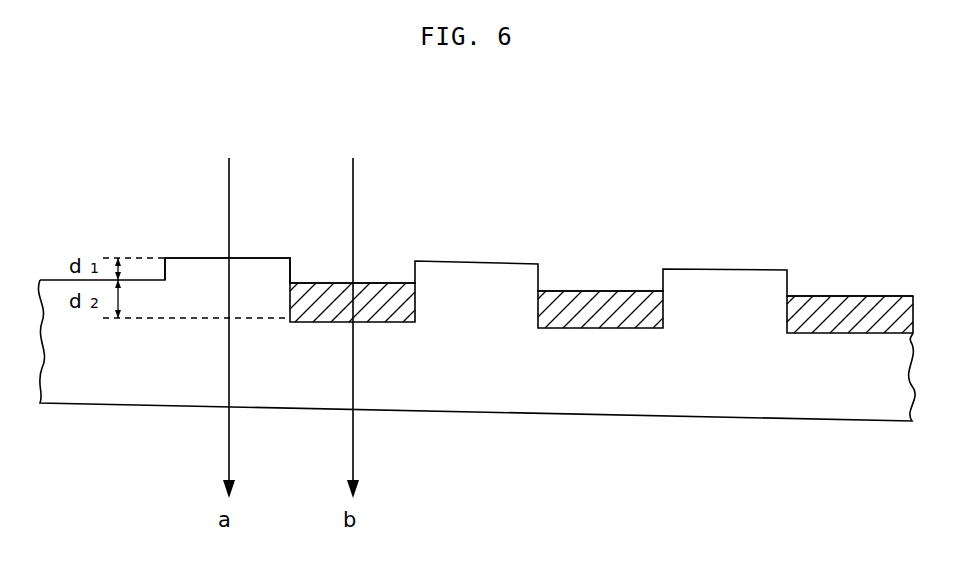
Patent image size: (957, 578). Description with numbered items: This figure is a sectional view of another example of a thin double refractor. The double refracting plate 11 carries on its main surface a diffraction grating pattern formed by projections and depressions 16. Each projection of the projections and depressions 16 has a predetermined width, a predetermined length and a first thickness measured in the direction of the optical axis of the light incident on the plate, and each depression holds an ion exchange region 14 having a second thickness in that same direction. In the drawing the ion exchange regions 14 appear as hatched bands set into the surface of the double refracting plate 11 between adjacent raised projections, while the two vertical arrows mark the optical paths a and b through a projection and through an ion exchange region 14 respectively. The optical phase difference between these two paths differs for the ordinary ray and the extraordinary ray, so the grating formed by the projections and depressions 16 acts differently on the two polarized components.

The double refracting plate 11 is at (177, 395).
The ion exchange region 14 is at (385, 313).
The projections and depressions 16 is at (183, 253).